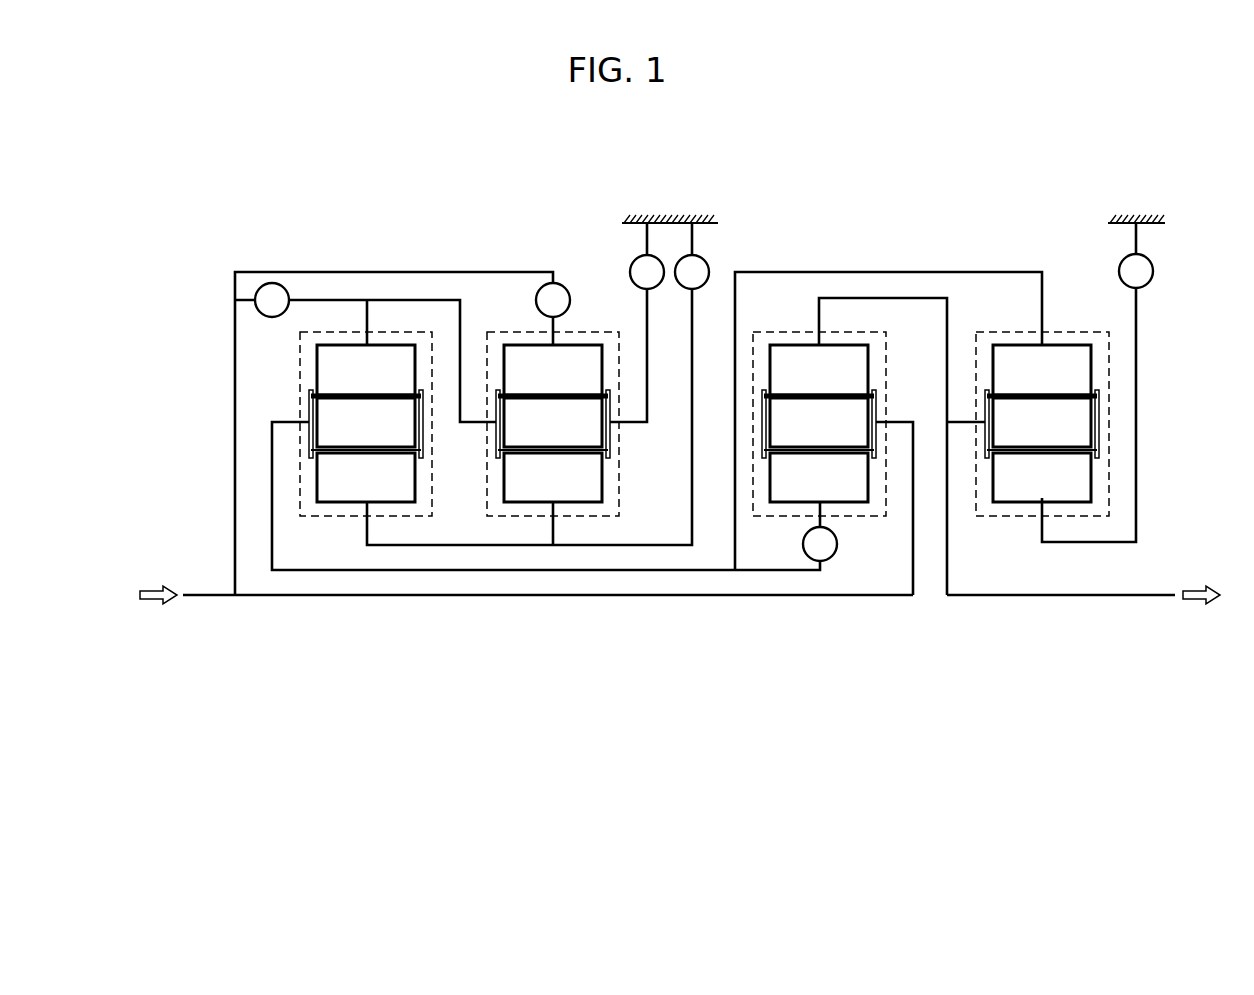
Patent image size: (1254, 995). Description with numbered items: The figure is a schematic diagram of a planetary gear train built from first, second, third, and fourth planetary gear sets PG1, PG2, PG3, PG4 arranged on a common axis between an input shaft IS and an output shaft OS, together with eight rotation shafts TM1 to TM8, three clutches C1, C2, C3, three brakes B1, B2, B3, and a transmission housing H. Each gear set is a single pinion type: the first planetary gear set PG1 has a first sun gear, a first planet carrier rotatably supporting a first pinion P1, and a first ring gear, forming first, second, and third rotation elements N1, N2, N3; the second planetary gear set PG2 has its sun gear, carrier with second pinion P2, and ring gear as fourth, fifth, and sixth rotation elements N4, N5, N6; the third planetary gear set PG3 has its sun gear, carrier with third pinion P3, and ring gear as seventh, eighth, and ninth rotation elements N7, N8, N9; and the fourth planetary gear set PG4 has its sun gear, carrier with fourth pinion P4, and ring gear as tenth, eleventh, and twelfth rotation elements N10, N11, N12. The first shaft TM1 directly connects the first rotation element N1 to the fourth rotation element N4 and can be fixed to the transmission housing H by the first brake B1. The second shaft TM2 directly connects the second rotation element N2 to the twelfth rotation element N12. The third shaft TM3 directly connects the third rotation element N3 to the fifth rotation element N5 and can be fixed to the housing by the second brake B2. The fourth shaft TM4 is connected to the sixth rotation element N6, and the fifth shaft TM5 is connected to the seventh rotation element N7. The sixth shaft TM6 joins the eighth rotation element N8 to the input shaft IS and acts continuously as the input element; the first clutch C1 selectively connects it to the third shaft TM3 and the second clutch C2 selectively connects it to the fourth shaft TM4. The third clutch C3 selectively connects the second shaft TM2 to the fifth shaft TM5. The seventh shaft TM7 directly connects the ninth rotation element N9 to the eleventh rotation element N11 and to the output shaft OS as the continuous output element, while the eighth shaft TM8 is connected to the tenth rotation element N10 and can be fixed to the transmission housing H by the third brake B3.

The input shaft IS is at (192, 598).
The output shaft OS is at (1135, 598).
The transmission housing H is at (1135, 221).
The first planetary gear set PG1 is at (335, 522).
The second planetary gear set PG2 is at (527, 522).
The third planetary gear set PG3 is at (847, 522).
The fourth planetary gear set PG4 is at (1091, 522).
The first rotation element N1 is at (366, 477).
The second rotation element N2 is at (330, 410).
The third rotation element N3 is at (366, 370).
The fourth rotation element N4 is at (553, 477).
The fifth rotation element N5 is at (497, 446).
The sixth rotation element N6 is at (553, 370).
The seventh rotation element N7 is at (819, 477).
The eighth rotation element N8 is at (852, 410).
The ninth rotation element N9 is at (819, 370).
The tenth rotation element N10 is at (1042, 477).
The eleventh rotation element N11 is at (1100, 398).
The twelfth rotation element N12 is at (1042, 370).
The first pinion P1 is at (366, 422).
The second pinion P2 is at (553, 422).
The third pinion P3 is at (819, 422).
The fourth pinion P4 is at (1042, 422).
The first shaft TM1 is at (457, 548).
The second shaft TM2 is at (623, 573).
The third shaft TM3 is at (426, 296).
The fourth shaft TM4 is at (559, 323).
The fifth shaft TM5 is at (824, 517).
The sixth shaft TM6 is at (694, 598).
The seventh shaft TM7 is at (917, 296).
The eighth shaft TM8 is at (1140, 506).
The first clutch C1 is at (272, 300).
The second clutch C2 is at (553, 300).
The third clutch C3 is at (820, 544).
The first brake B1 is at (692, 256).
The second brake B2 is at (637, 322).
The third brake B3 is at (1136, 255).